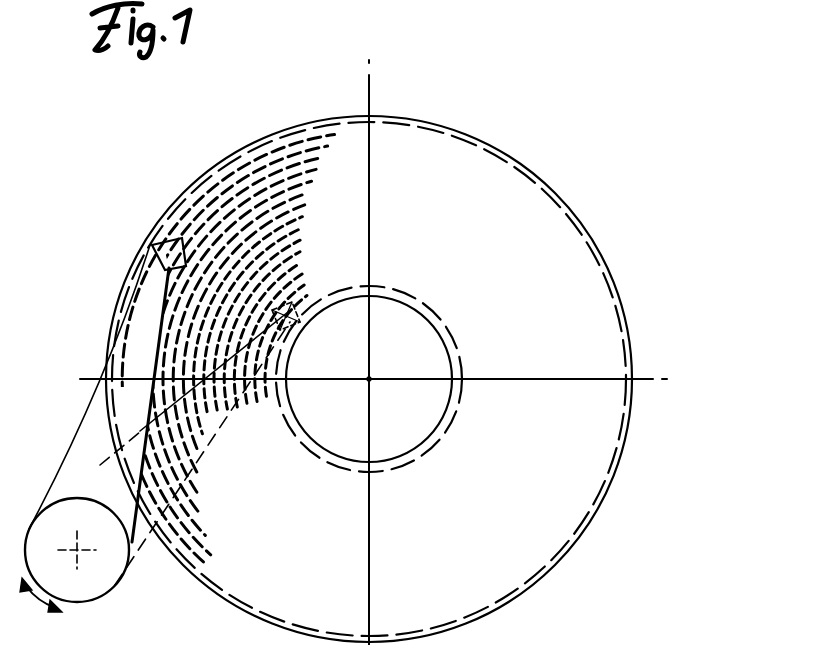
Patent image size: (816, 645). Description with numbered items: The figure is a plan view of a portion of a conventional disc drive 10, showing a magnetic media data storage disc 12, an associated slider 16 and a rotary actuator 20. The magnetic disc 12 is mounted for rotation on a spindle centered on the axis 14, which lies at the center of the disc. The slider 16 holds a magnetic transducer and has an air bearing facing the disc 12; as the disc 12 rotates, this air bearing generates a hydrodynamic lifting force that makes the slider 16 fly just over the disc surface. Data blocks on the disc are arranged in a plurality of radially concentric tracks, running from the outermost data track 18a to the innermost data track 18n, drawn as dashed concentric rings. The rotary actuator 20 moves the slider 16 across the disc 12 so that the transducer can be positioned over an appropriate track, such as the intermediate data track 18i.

The disc drive 10 is at (604, 178).
The magnetic media data storage disc 12 is at (586, 533).
The axis 14 is at (371, 379).
The slider 16 is at (150, 245).
The outermost data track 18a is at (458, 137).
The data track 18i is at (390, 139).
The innermost data track 18n is at (412, 292).
The rotary actuator 20 is at (98, 578).